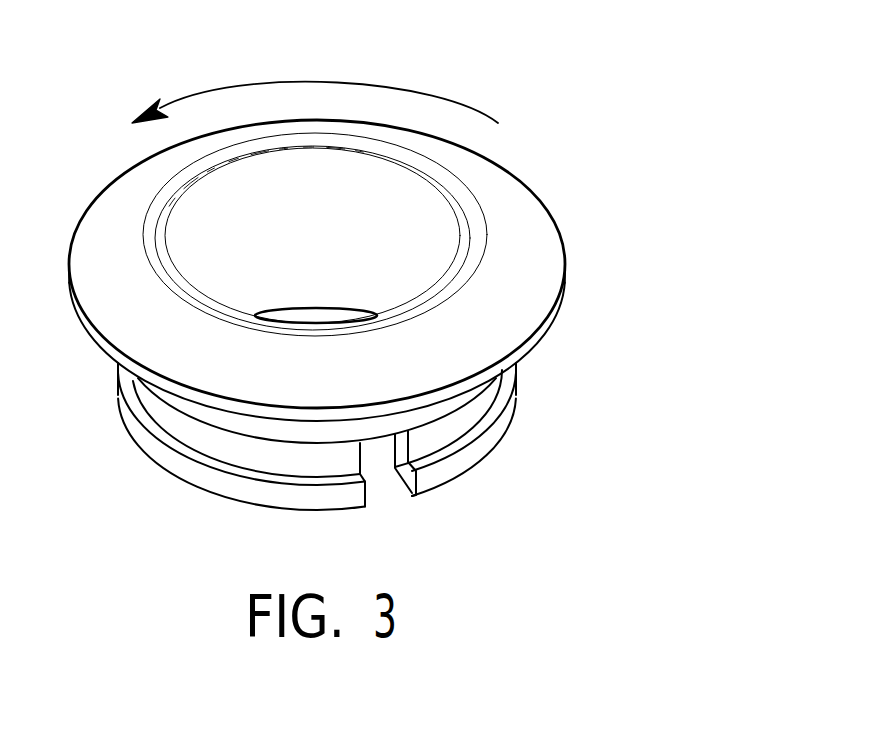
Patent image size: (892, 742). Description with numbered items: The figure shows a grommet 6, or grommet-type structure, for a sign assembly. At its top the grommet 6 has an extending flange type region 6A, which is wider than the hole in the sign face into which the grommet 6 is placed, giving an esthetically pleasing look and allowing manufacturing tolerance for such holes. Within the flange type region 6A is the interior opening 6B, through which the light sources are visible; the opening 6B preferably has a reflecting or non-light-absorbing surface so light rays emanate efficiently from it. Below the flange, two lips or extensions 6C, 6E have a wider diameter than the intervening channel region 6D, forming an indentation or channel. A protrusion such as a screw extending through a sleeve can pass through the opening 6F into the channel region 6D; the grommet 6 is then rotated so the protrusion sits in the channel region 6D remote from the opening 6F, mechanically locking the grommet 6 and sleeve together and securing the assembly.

The grommet 6 is at (385, 291).
The flange type region 6A is at (556, 238).
The interior opening 6B is at (427, 240).
The lip or extension 6C is at (455, 467).
The channel region 6D is at (440, 433).
The lip or extension 6E is at (433, 412).
The opening 6F is at (383, 488).